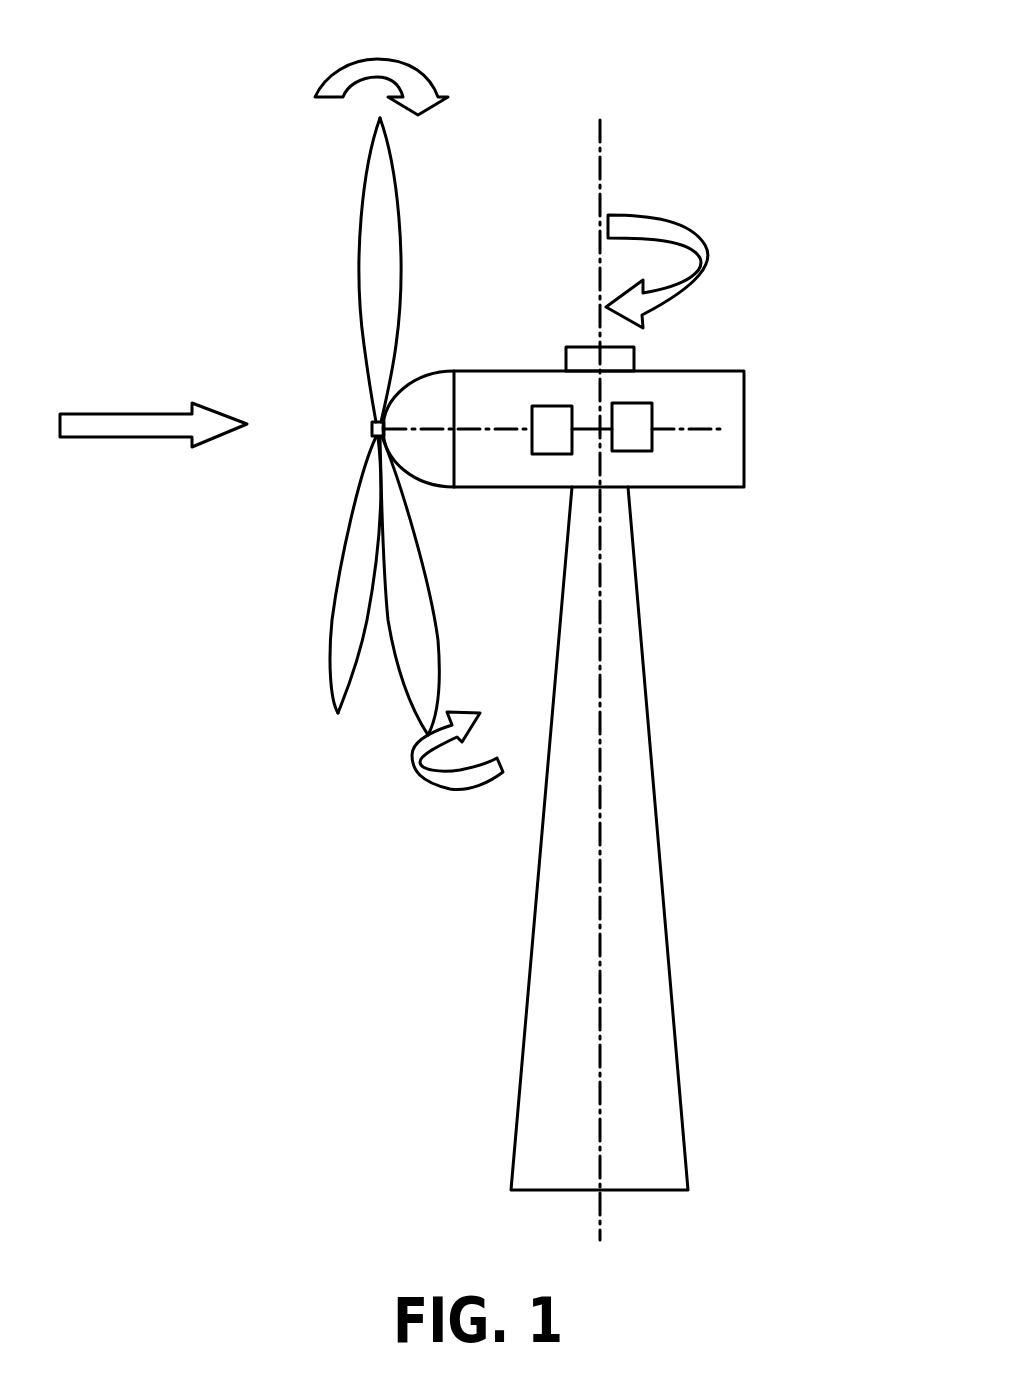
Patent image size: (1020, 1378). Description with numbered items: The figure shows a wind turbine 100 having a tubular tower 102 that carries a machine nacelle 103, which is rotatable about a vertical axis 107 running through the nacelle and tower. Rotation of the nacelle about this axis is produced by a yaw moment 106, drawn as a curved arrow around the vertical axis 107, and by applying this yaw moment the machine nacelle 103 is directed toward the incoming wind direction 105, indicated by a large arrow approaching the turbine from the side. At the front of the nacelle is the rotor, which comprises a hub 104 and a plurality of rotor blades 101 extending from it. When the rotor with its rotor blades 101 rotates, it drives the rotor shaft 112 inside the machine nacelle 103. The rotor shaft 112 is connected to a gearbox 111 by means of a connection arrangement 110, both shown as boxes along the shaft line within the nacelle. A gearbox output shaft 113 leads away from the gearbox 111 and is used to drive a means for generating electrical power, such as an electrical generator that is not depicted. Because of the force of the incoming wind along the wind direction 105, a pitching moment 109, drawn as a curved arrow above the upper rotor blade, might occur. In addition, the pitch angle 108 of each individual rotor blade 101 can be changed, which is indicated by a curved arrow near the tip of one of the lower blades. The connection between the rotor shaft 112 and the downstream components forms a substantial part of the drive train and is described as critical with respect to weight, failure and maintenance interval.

The wind turbine 100 is at (823, 82).
The rotor blades 101 is at (358, 262).
The tubular tower 102 is at (653, 788).
The machine nacelle 103 is at (745, 413).
The hub 104 is at (423, 372).
The incoming wind direction 105 is at (193, 440).
The yaw moment 106 is at (708, 268).
The vertical axis 107 is at (600, 127).
The pitch angle 108 is at (417, 773).
The pitching moment 109 is at (328, 88).
The connection arrangement 110 is at (552, 455).
The gearbox 111 is at (650, 438).
The rotor shaft 112 is at (475, 428).
The gearbox output shaft 113 is at (687, 428).